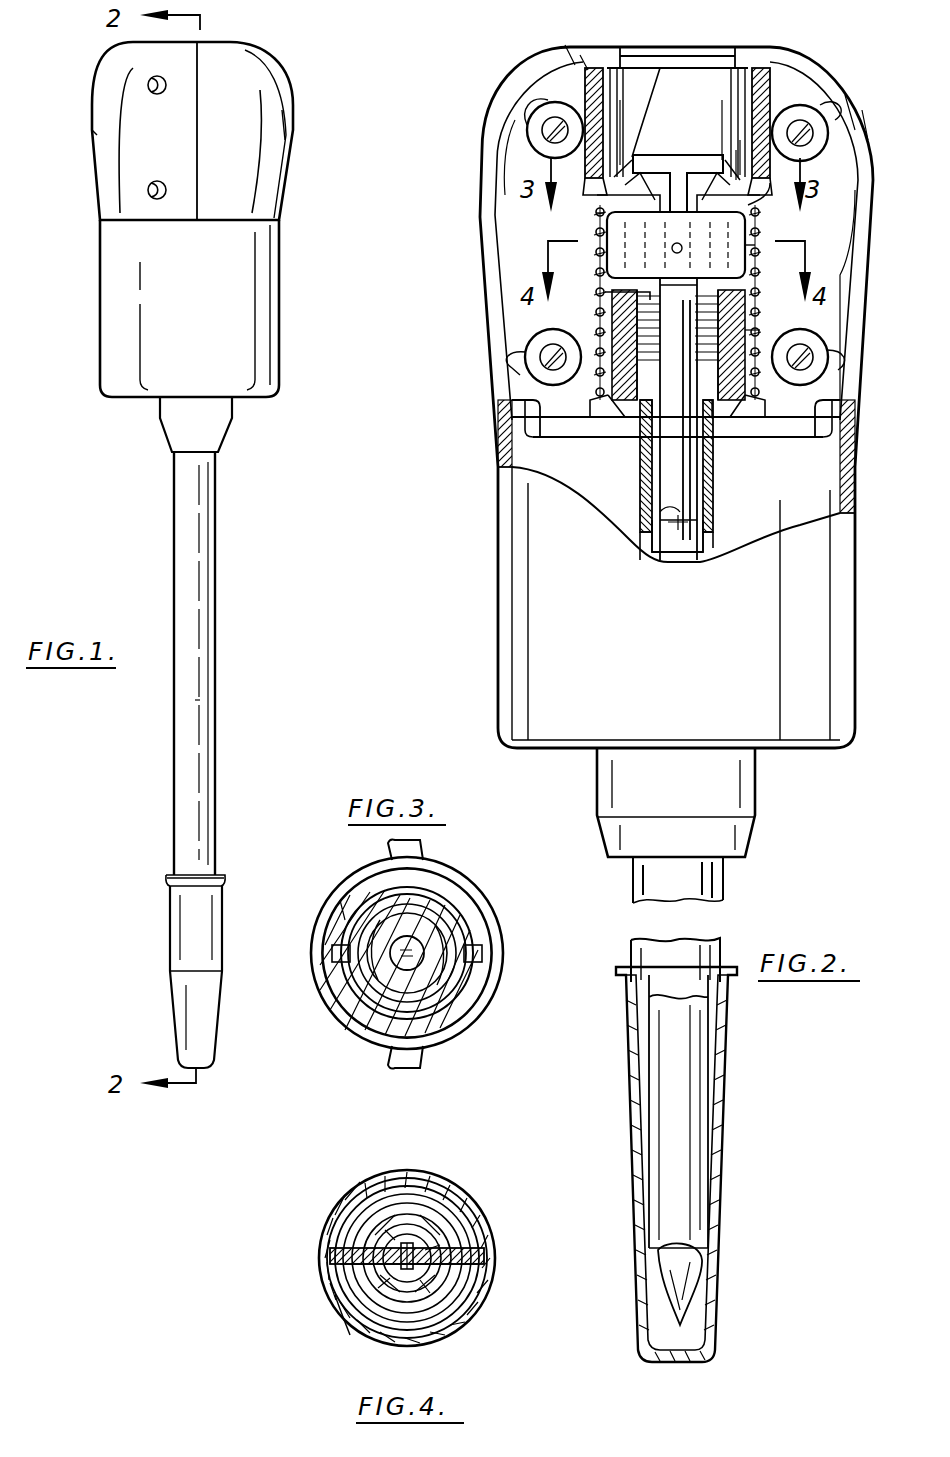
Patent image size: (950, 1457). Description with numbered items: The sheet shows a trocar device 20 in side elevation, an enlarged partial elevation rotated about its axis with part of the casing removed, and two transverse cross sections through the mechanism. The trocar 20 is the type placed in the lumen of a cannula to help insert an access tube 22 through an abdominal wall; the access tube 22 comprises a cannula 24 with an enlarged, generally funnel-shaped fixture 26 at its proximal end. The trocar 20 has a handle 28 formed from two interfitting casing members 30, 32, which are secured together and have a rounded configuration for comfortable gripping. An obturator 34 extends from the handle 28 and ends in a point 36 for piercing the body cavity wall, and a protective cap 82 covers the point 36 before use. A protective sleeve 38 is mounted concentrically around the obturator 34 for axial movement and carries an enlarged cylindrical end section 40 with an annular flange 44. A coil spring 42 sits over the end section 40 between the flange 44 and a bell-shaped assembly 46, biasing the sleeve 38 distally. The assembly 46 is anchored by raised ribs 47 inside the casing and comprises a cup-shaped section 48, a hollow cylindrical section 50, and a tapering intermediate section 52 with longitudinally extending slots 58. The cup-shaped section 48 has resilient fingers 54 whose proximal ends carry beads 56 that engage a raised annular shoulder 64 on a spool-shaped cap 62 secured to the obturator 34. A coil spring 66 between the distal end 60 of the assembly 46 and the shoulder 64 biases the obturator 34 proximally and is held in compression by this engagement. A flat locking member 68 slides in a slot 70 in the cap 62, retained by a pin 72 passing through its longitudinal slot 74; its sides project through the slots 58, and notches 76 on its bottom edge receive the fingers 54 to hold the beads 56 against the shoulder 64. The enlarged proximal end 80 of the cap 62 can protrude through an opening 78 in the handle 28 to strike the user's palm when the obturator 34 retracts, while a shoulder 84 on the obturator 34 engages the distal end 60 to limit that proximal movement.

In FIG. 1, the trocar device 20 is at (128, 498).
In FIG. 2, the trocar device 20 is at (482, 665).
In FIG. 1, the access tube 22 is at (221, 622).
In FIG. 2, the access tube 22 is at (728, 892).
In FIG. 1, the cannula 24 is at (200, 706).
In FIG. 2, the cannula 24 is at (636, 945).
In FIG. 1, the funnel-shaped fixture 26 is at (270, 333).
In FIG. 2, the funnel-shaped fixture 26 is at (498, 593).
In FIG. 1, the handle 28 is at (290, 95).
In FIG. 1, the casing member 30 is at (97, 143).
In FIG. 1, the casing member 32 is at (270, 165).
In FIG. 2, the casing member 32 is at (830, 90).
In FIG. 2, the obturator 34 is at (690, 515).
In FIG. 2, the point 36 is at (690, 1290).
In FIG. 2, the protective sleeve 38 is at (678, 555).
In FIG. 2, the end section 40 is at (760, 328).
In FIG. 4, the end section 40 is at (368, 1322).
In FIG. 2, the coil spring 42 is at (540, 400).
In FIG. 4, the coil spring 42 is at (408, 1172).
In FIG. 2, the annular flange 44 is at (745, 420).
In FIG. 2, the bell-shaped assembly 46 is at (775, 198).
In FIG. 3, the bell-shaped assembly 46 is at (365, 1040).
In FIG. 2, the raised ribs 47 is at (566, 92).
In FIG. 3, the raised ribs 47 is at (462, 885).
In FIG. 2, the cup-shaped section 48 is at (640, 430).
In FIG. 4, the cup-shaped section 48 is at (450, 1308).
In FIG. 2, the cylindrical section 50 is at (605, 115).
In FIG. 3, the cylindrical section 50 is at (488, 921).
In FIG. 2, the intermediate section 52 is at (618, 158).
In FIG. 2, the resilient fingers 54 is at (600, 335).
In FIG. 2, the beads 56 is at (597, 270).
In FIG. 4, the beads 56 is at (455, 1272).
In FIG. 2, the slots 58 is at (760, 195).
In FIG. 4, the slots 58 is at (455, 1202).
In FIG. 2, the distal end 60 is at (715, 417).
In FIG. 2, the spool-shaped cap 62 is at (675, 150).
In FIG. 3, the spool-shaped cap 62 is at (450, 1000).
In FIG. 2, the annular shoulder 64 is at (605, 298).
In FIG. 2, the coil spring 66 is at (640, 417).
In FIG. 2, the locking member 68 is at (605, 240).
In FIG. 3, the locking member 68 is at (470, 975).
In FIG. 4, the locking member 68 is at (470, 1235).
In FIG. 2, the slot 70 is at (742, 140).
In FIG. 4, the slot 70 is at (420, 1215).
In FIG. 2, the pin 72 is at (678, 250).
In FIG. 4, the pin 72 is at (405, 1250).
In FIG. 2, the slot 74 is at (596, 211).
In FIG. 4, the slot 74 is at (405, 1272).
In FIG. 2, the notches 76 is at (752, 250).
In FIG. 2, the opening 78 is at (662, 46).
In FIG. 2, the proximal end 80 is at (722, 140).
In FIG. 3, the proximal end 80 is at (388, 925).
In FIG. 2, the protective cap 82 is at (727, 1118).
In FIG. 2, the shoulder 84 is at (641, 525).